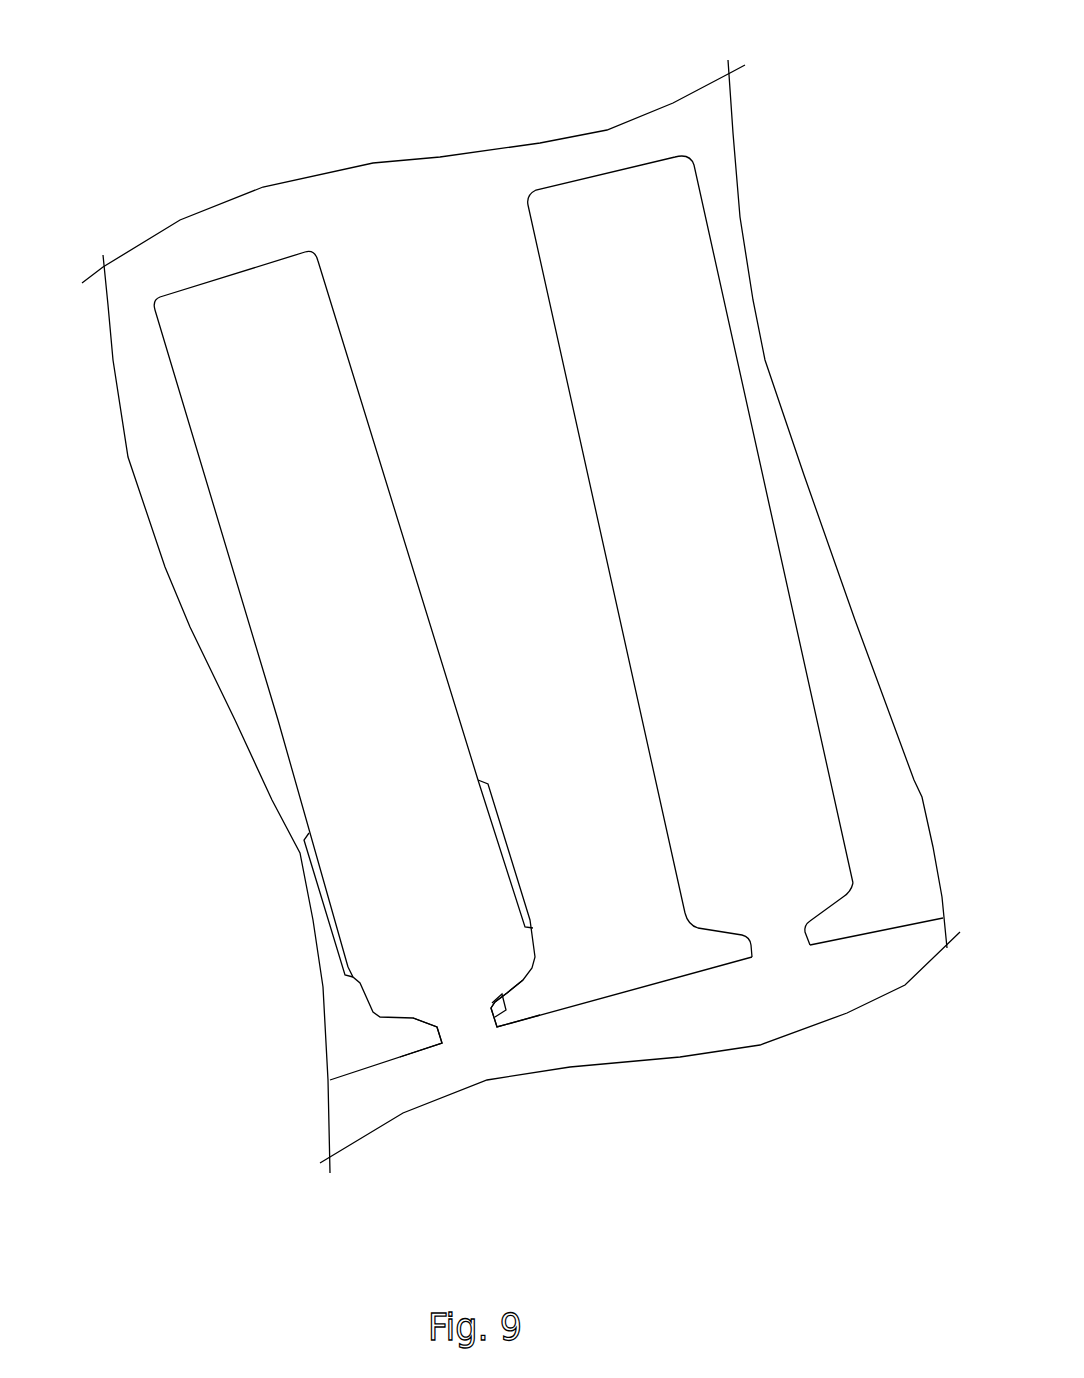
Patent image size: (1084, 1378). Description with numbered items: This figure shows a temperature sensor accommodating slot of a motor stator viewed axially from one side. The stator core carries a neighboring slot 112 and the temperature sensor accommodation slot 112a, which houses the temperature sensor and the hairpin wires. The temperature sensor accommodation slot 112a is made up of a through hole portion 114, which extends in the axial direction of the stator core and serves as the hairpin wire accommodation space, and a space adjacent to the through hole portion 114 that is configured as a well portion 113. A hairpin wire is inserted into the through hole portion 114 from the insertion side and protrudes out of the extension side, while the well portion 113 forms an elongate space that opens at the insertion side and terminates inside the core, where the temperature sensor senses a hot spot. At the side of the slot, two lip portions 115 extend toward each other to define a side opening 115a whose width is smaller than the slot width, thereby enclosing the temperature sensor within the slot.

The slot 112 is at (600, 135).
The temperature sensor accommodation slot 112a is at (397, 287).
The well portion 113 is at (505, 997).
The through hole portion 114 is at (224, 482).
The lip portions 115 is at (413, 1037).
The side opening 115a is at (457, 1066).